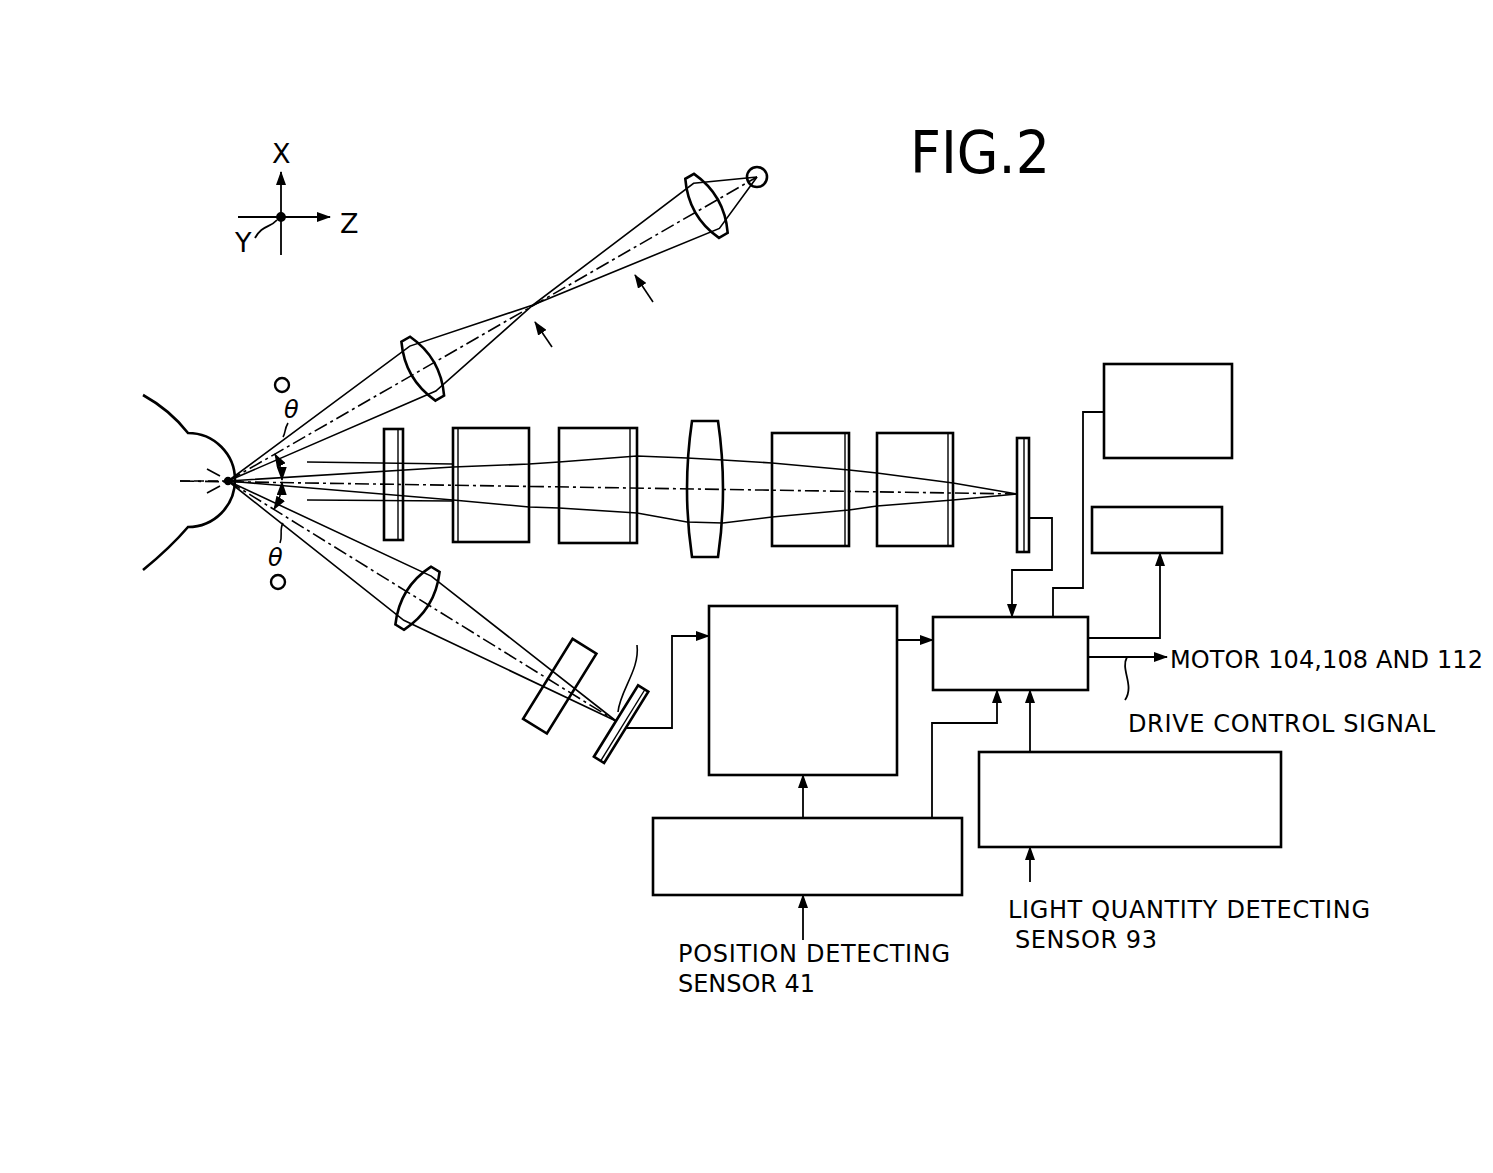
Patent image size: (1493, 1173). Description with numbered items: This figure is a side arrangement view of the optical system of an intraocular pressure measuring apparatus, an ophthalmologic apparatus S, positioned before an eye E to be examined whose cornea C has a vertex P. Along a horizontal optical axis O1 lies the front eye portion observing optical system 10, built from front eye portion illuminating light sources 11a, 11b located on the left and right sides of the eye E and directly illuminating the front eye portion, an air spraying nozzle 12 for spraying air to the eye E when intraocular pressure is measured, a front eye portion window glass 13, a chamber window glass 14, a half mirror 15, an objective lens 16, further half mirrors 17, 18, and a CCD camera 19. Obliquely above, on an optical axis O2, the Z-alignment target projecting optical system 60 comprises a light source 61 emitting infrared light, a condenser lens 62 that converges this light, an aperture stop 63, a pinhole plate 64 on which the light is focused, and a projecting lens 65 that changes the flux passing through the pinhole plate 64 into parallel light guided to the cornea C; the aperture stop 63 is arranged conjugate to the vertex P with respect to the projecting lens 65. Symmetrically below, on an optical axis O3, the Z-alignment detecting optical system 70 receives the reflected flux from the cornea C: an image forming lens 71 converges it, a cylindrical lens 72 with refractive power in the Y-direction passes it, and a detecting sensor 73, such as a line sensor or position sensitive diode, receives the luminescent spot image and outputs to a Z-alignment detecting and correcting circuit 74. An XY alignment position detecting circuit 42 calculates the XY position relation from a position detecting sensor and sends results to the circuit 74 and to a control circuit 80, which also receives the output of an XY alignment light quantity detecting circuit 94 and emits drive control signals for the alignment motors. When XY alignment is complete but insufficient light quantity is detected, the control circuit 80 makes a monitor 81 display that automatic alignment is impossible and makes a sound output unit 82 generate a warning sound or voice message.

The eye to be examined E is at (177, 383).
The cornea C is at (209, 437).
The vertex of the cornea P is at (235, 462).
The ophthalmologic apparatus S is at (430, 237).
The front eye portion observing optical system 10 is at (658, 390).
The front eye portion illuminating light source 11a is at (282, 378).
The front eye portion illuminating light source 11b is at (277, 592).
The air spraying nozzle 12 is at (345, 458).
The front eye portion window glass 13 is at (405, 450).
The chamber window glass 14 is at (505, 428).
The half mirror 15 is at (593, 428).
The objective lens 16 is at (705, 421).
The half mirror 17 is at (800, 433).
The half mirror 18 is at (898, 433).
The CCD camera 19 is at (1020, 438).
The optical axis O1 is at (748, 493).
The optical axis O2 is at (363, 392).
The optical axis O3 is at (348, 566).
The Z-alignment target projecting optical system 60 is at (543, 190).
The light source for Z-alignment 61 is at (757, 167).
The condenser lens 62 is at (688, 172).
The aperture stop 63 is at (615, 232).
The pinhole plate 64 is at (523, 297).
The projecting lens 65 is at (408, 336).
The Z-alignment detecting optical system 70 is at (470, 700).
The image forming lens 71 is at (412, 630).
The cylindrical lens 72 is at (533, 727).
The detecting sensor 73 is at (597, 763).
The Z-alignment detecting and correcting circuit 74 is at (840, 606).
The control circuit 80 is at (958, 617).
The monitor 81 is at (1222, 530).
The sound output unit 82 is at (1232, 418).
The XY alignment position detecting circuit 42 is at (653, 845).
The XY alignment light quantity detecting circuit 94 is at (1281, 815).